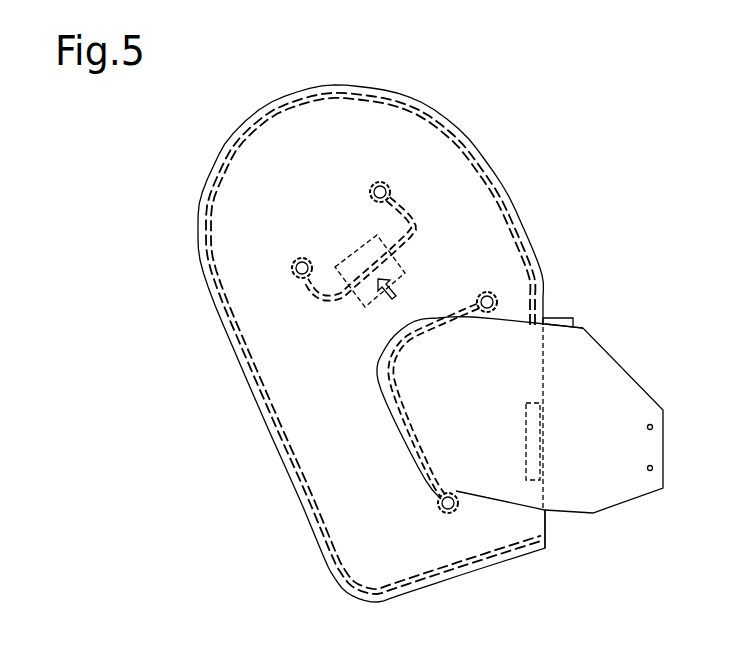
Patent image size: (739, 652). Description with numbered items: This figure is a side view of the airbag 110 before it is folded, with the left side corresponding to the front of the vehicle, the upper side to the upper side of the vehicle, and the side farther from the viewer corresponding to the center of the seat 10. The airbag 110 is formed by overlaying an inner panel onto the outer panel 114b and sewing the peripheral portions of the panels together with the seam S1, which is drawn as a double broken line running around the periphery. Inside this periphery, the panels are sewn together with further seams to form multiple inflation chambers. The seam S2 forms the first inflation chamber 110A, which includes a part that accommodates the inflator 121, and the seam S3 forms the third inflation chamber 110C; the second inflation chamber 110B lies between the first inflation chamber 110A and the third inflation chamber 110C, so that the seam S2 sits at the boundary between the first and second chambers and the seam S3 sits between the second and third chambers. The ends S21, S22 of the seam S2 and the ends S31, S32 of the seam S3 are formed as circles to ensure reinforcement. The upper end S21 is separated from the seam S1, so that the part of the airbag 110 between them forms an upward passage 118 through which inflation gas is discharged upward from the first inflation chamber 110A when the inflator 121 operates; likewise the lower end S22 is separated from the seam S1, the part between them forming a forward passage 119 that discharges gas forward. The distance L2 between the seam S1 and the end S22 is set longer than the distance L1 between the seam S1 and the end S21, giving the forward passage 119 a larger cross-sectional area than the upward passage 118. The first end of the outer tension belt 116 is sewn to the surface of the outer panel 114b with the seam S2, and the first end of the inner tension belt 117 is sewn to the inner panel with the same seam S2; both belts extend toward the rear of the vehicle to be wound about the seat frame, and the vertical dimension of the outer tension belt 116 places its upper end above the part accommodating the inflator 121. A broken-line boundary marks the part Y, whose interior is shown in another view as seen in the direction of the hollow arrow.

The airbag 110 is at (160, 169).
The third inflation chamber 110C is at (345, 233).
The end of seam S3 S31 is at (380, 180).
The seam S1 is at (478, 148).
The end of seam S3 S32 is at (302, 256).
The seam S3 is at (404, 204).
The part Y is at (405, 262).
The end of seam S2 S21 is at (476, 302).
The upward passage 118 is at (505, 263).
The distance L1 is at (499, 296).
The inner tension belt 117 is at (558, 320).
The outer panel 114b is at (250, 323).
The second inflation chamber 110B is at (375, 325).
The seam S2 is at (385, 424).
The inflator 121 is at (541, 407).
The seat 10 is at (250, 443).
The end of seam S2 S22 is at (436, 503).
The forward passage 119 is at (430, 551).
The distance L2 is at (454, 512).
The first inflation chamber 110A is at (470, 493).
The outer tension belt 116 is at (654, 489).